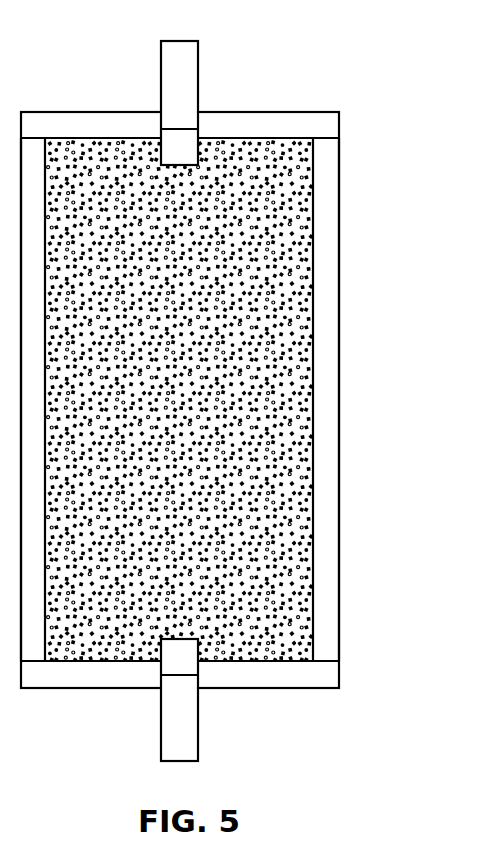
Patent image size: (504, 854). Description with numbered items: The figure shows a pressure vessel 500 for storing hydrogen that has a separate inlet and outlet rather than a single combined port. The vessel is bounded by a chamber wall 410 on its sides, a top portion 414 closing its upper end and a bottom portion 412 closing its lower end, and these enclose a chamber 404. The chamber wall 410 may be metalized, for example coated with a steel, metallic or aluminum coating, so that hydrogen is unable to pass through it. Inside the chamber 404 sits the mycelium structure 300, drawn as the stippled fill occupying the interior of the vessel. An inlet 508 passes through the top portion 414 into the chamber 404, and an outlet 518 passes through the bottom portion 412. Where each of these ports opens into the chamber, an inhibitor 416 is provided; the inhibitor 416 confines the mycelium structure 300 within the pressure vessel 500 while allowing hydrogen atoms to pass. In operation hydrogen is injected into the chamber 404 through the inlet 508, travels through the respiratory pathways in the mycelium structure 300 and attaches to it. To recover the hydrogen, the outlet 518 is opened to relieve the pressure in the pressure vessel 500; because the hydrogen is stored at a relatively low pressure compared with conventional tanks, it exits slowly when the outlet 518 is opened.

The mycelium structure 300 is at (289, 455).
The pressure vessel 500 is at (366, 68).
The top portion 414 is at (250, 112).
The bottom portion 412 is at (339, 673).
The chamber wall 410 is at (327, 337).
The chamber 404 is at (315, 260).
The inlet 508 is at (200, 65).
The outlet 518 is at (200, 718).
The inhibitor 416 is at (182, 148).